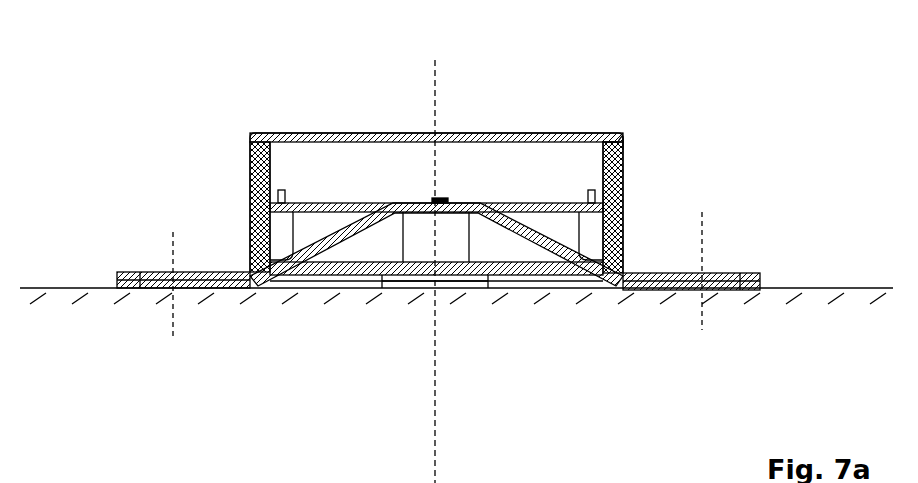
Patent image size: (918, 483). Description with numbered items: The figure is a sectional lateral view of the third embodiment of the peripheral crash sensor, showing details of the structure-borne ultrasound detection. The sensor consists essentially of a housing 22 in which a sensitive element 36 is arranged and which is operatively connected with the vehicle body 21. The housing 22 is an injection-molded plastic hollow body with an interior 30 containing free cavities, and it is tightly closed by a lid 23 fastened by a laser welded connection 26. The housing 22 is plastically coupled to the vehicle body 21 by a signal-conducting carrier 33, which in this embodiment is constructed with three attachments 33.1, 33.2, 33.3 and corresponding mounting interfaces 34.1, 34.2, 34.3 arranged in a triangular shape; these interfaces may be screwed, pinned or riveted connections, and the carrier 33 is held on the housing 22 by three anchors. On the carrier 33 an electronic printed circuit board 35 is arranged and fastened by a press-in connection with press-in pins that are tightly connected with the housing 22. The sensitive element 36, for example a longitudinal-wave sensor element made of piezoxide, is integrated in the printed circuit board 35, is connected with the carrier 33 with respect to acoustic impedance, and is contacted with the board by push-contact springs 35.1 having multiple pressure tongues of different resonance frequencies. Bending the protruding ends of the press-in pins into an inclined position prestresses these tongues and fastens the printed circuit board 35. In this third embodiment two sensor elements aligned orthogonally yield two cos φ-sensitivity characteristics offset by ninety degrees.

The vehicle body 21 is at (797, 302).
The housing 22 is at (620, 170).
The lid 23 is at (363, 133).
The laser welded connection 26 is at (613, 133).
The interior 30 is at (393, 167).
The carrier 33 is at (228, 273).
The attachment 33.1 is at (210, 293).
The attachment 33.2 is at (652, 290).
The attachment 33.3 is at (408, 283).
The mounting interface 34.1 is at (168, 293).
The mounting interface 34.2 is at (702, 293).
The mounting interface 34.3 is at (432, 290).
The electronic printed circuit board 35 is at (545, 205).
The push-contact springs 35.1 is at (433, 203).
The sensitive element 36 is at (422, 277).